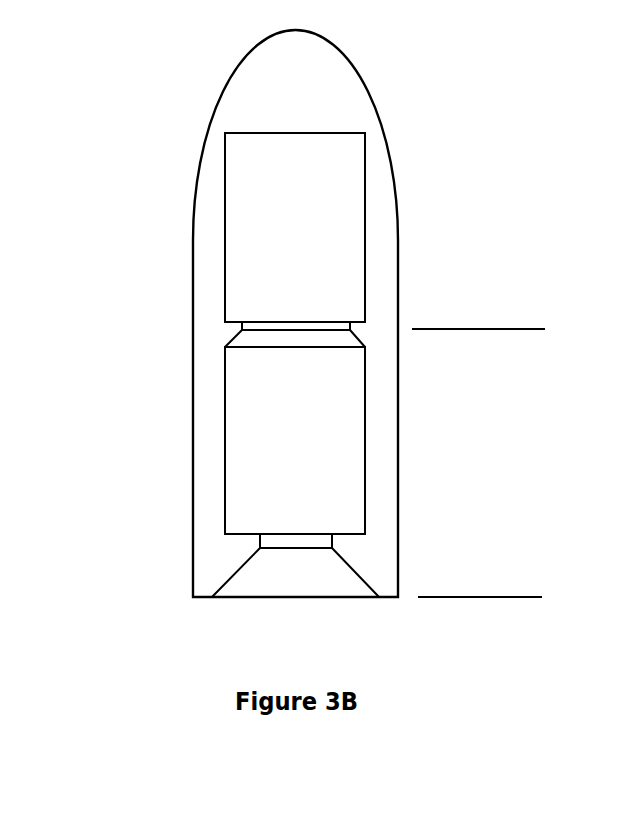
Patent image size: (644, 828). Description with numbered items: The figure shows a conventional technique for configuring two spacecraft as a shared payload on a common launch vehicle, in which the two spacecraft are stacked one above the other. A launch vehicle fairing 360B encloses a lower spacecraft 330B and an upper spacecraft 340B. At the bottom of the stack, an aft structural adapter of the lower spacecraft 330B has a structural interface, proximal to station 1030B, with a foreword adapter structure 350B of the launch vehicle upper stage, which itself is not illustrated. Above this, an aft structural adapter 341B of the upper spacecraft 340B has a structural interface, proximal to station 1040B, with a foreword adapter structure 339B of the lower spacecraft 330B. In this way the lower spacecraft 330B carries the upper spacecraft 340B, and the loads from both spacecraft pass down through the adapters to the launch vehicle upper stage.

The launch vehicle fairing 360B is at (366, 97).
The upper spacecraft 340B is at (360, 216).
The aft structural adapter of the upper spacecraft 341B is at (241, 327).
The foreword adapter structure of the lower spacecraft 339B is at (243, 338).
The lower spacecraft 330B is at (225, 513).
The foreword adapter structure of a launch vehicle upper stage 350B is at (345, 560).
The station 1040B is at (517, 330).
The station 1030B is at (514, 598).